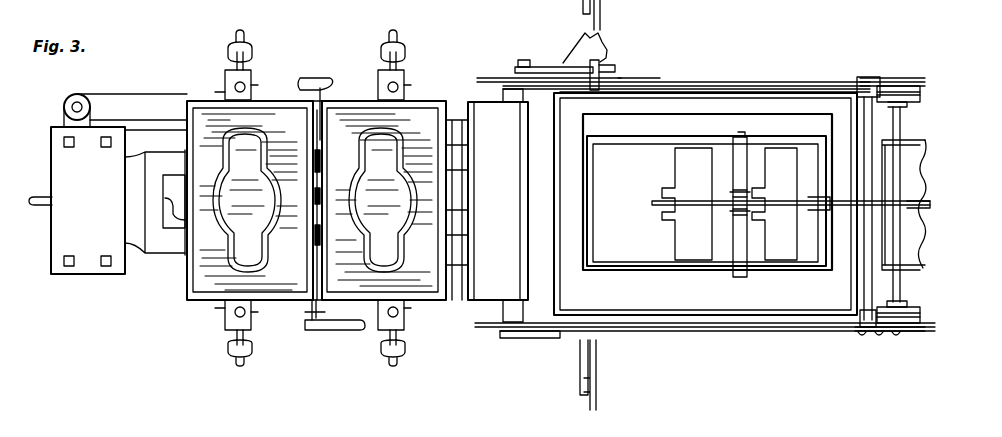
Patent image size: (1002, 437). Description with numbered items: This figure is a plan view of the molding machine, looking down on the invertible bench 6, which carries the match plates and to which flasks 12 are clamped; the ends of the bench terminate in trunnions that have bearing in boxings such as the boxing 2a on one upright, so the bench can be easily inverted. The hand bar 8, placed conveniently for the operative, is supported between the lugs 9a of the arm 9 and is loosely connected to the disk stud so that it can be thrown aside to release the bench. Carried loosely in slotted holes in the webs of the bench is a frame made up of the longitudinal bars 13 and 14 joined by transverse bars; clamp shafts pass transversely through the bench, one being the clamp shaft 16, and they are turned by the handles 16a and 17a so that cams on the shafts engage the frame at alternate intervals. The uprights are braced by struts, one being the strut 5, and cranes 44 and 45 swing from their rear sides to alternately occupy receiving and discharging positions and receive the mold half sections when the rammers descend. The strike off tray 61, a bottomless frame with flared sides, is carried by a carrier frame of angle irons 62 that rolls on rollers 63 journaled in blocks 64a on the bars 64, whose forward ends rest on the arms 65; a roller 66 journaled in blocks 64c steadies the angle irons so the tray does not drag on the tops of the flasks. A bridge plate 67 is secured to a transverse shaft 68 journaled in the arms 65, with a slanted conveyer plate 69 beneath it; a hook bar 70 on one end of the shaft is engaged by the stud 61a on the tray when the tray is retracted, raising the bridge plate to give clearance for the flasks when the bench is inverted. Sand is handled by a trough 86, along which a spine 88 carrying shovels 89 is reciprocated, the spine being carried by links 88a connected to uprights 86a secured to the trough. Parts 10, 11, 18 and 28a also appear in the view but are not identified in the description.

The boxing 2a is at (85, 274).
The pin 28a is at (41, 197).
The crane 45 is at (140, 101).
The invertible bench 6 is at (152, 256).
The flask 12 is at (195, 300).
The mold cavity 11 is at (289, 121).
The mold half 10 is at (384, 200).
The longitudinal bar 14 is at (275, 330).
The clamp shaft 16 is at (312, 318).
The handle 16a is at (352, 328).
The longitudinal bar 13 is at (270, 90).
The clamp 18 is at (405, 78).
The strut 5 is at (455, 260).
The bridge plate 67 is at (498, 201).
The conveyer plate 69 is at (535, 250).
The hook bar 70 is at (548, 67).
The transverse shaft 68 is at (521, 60).
The crane 44 is at (607, 62).
The stud 61a is at (655, 54).
The arm 65 is at (532, 340).
The lug 9a is at (580, 4).
The arm 9 is at (580, 366).
The hand bar 8 is at (597, 400).
The strike off tray 61 is at (737, 100).
The trough 86 is at (648, 140).
The shovel 89 is at (680, 240).
The link 88a is at (776, 204).
The upright 86a is at (740, 245).
The spine 88 is at (920, 200).
The block 64c is at (872, 77).
The bar 64 is at (920, 78).
The angle iron 62 is at (922, 96).
The roller 66 is at (885, 104).
The roller 63 is at (905, 300).
The block 64a is at (895, 334).
The handle 17a is at (276, 9).